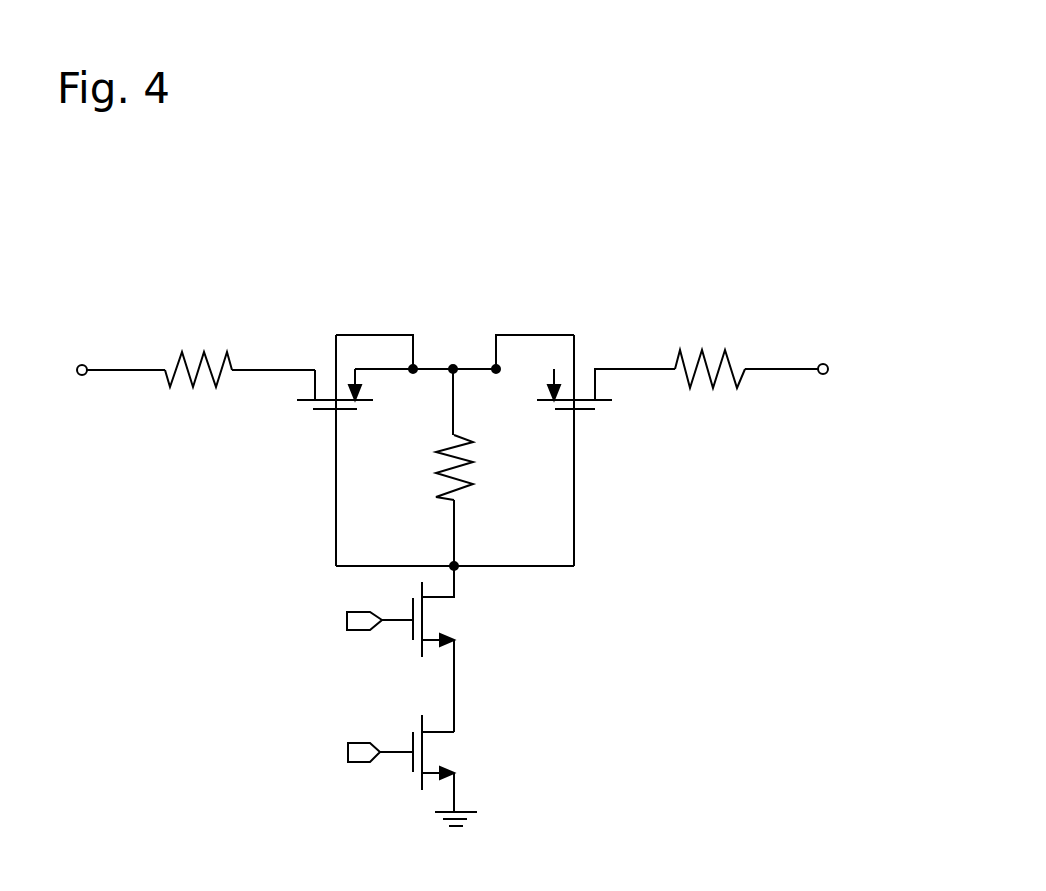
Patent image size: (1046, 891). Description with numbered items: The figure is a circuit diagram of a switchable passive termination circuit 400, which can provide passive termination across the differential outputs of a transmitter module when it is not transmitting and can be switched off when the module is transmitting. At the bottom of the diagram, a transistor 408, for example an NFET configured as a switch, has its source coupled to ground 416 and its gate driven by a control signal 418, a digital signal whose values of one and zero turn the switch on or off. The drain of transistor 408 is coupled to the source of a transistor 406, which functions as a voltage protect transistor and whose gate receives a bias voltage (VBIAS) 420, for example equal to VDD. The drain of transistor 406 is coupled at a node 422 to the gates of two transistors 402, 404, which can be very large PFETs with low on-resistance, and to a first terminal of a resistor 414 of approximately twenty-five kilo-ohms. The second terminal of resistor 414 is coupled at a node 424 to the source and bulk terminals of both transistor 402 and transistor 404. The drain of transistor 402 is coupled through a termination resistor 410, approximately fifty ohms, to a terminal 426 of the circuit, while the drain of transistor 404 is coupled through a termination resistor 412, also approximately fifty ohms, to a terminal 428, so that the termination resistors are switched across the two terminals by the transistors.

The switchable passive termination circuit 400 is at (778, 152).
The transistor 402 is at (313, 383).
The transistor 404 is at (602, 385).
The transistor 406 is at (437, 600).
The transistor 408 is at (437, 733).
The termination resistor 410 is at (195, 362).
The termination resistor 412 is at (715, 362).
The resistor 414 is at (463, 477).
The ground 416 is at (460, 812).
The control signal 418 is at (357, 763).
The bias voltage (VBIAS) 420 is at (357, 631).
The node 422 is at (458, 562).
The node 424 is at (455, 362).
The terminal 426 is at (82, 376).
The terminal 428 is at (821, 376).